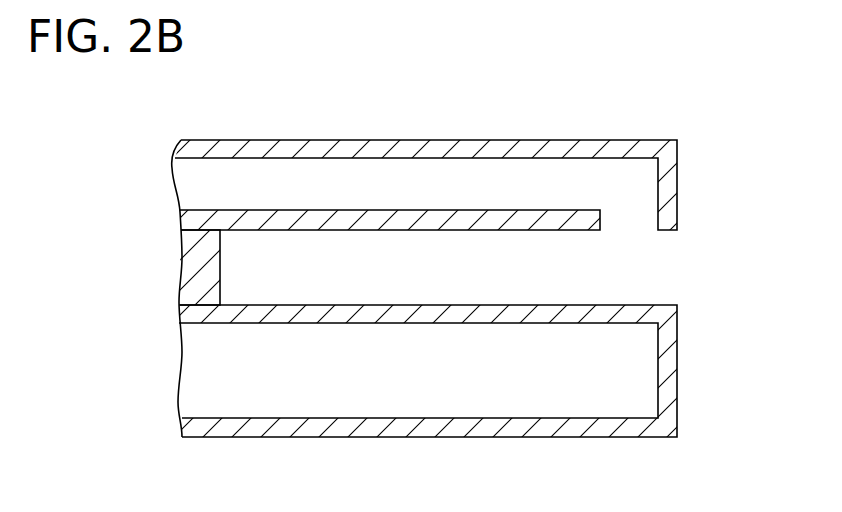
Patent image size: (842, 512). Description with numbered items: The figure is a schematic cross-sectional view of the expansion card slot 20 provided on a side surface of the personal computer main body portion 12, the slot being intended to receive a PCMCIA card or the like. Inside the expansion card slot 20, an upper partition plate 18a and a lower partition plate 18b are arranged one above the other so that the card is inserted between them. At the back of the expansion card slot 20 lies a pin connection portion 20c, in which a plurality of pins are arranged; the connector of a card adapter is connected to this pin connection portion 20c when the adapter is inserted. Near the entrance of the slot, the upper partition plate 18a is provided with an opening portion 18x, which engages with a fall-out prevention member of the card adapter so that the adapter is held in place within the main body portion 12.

The personal computer main body portion 12 is at (597, 152).
The upper partition plate 18a is at (475, 222).
The lower partition plate 18b is at (485, 323).
The opening portion 18x is at (627, 224).
The expansion card slot 20 is at (708, 227).
The pin connection portion 20c is at (189, 262).